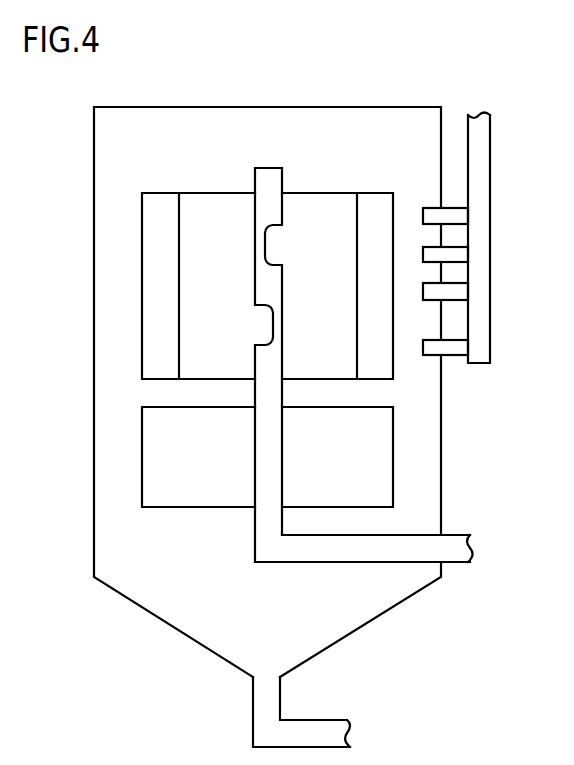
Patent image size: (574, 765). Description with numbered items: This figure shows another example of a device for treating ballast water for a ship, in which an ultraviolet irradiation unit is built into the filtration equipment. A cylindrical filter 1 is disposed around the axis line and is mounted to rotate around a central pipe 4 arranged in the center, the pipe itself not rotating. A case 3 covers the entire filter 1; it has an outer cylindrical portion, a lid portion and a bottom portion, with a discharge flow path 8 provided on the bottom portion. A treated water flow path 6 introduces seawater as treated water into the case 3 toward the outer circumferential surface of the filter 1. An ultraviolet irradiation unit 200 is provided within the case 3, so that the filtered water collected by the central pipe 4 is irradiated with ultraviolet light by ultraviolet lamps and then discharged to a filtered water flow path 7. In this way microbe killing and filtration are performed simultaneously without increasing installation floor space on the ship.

The filter 1 is at (163, 290).
The case 3 is at (94, 237).
The central pipe 4 is at (283, 182).
The treated water flow path 6 is at (491, 270).
The filtered water flow path 7 is at (452, 565).
The discharge flow path 8 is at (253, 702).
The ultraviolet irradiation unit 200 is at (357, 462).